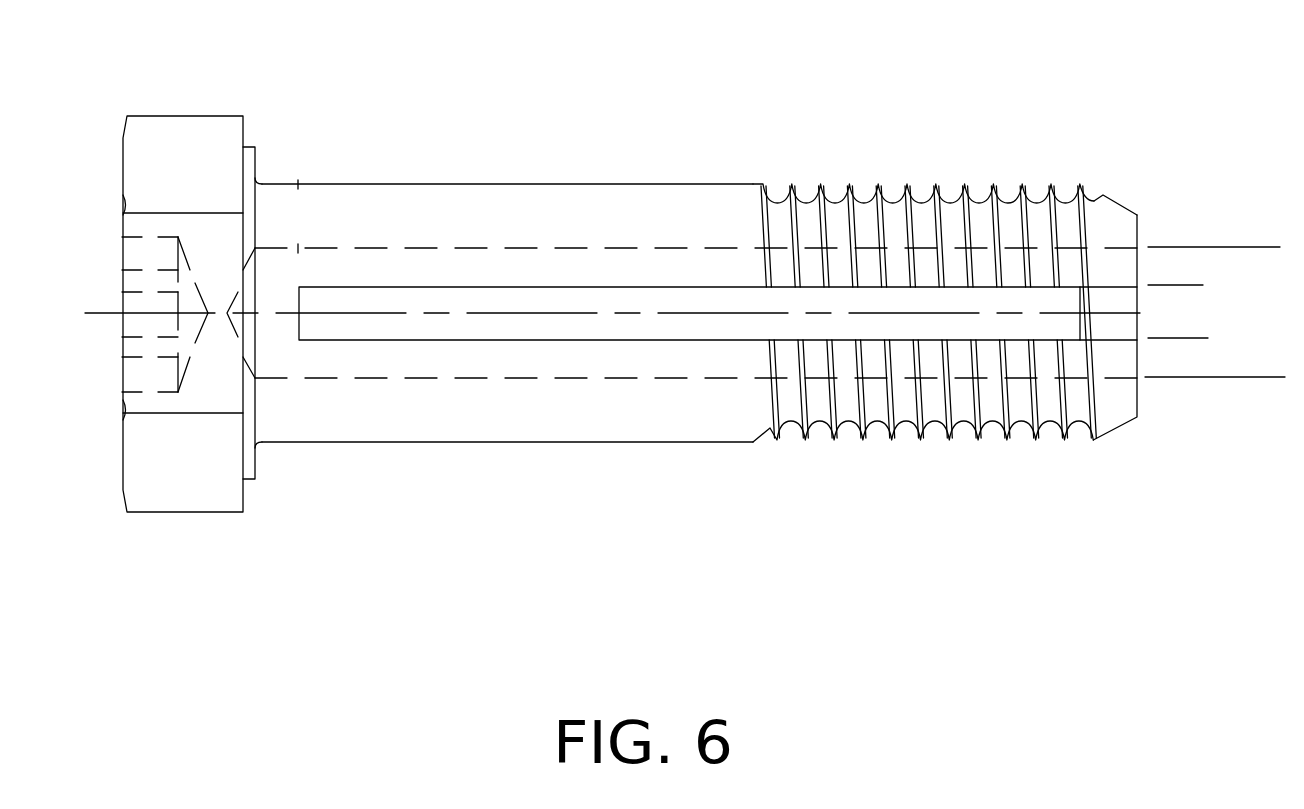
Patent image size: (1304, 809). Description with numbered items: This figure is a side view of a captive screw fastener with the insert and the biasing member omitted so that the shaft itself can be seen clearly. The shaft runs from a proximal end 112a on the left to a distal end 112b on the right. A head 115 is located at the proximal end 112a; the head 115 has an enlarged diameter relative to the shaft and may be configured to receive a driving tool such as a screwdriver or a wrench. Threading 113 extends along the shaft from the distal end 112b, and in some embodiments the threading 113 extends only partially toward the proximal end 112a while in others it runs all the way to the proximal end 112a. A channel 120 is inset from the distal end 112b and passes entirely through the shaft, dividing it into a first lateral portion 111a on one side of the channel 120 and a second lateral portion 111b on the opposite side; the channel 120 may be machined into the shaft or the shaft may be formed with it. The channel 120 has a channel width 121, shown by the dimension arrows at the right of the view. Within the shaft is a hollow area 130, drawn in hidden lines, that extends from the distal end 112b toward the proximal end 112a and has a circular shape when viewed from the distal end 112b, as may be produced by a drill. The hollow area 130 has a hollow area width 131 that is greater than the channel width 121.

The first lateral portion 111a is at (362, 425).
The second lateral portion 111b is at (400, 210).
The proximal end 112a is at (263, 172).
The distal end 112b is at (1137, 193).
The threading 113 is at (987, 430).
The head 115 is at (167, 137).
The channel 120 is at (1088, 350).
The channel width 121 is at (1163, 258).
The hollow area 130 is at (570, 245).
The hollow area width 131 is at (1252, 247).